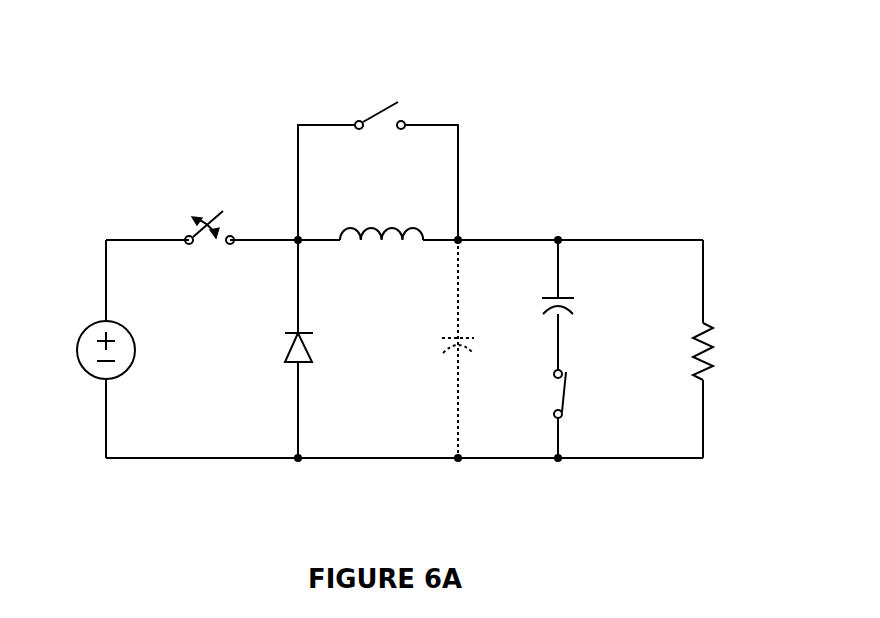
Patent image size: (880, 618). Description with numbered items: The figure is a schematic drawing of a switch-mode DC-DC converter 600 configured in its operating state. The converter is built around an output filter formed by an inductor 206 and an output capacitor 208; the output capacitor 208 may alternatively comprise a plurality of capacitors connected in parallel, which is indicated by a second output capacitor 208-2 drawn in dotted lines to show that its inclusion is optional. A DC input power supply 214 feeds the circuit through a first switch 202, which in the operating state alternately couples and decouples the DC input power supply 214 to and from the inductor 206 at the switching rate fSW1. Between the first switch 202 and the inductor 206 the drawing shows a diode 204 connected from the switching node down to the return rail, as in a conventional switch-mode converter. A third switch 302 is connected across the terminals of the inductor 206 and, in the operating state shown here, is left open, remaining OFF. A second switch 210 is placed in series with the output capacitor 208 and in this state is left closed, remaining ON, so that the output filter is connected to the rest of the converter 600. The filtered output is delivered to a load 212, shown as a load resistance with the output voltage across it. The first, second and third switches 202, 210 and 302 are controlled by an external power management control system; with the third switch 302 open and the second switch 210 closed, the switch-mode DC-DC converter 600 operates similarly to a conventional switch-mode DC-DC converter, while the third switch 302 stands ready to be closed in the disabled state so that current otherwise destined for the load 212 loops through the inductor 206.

The switch-mode DC-DC converter 600 is at (649, 87).
The first switch 202 is at (215, 195).
The diode 204 is at (278, 343).
The inductor 206 is at (383, 218).
The output capacitor 208 is at (578, 306).
The second output capacitor 208-2 is at (432, 344).
The second switch 210 is at (578, 394).
The load 212 is at (717, 372).
The DC input power supply 214 is at (88, 318).
The third switch 302 is at (377, 88).